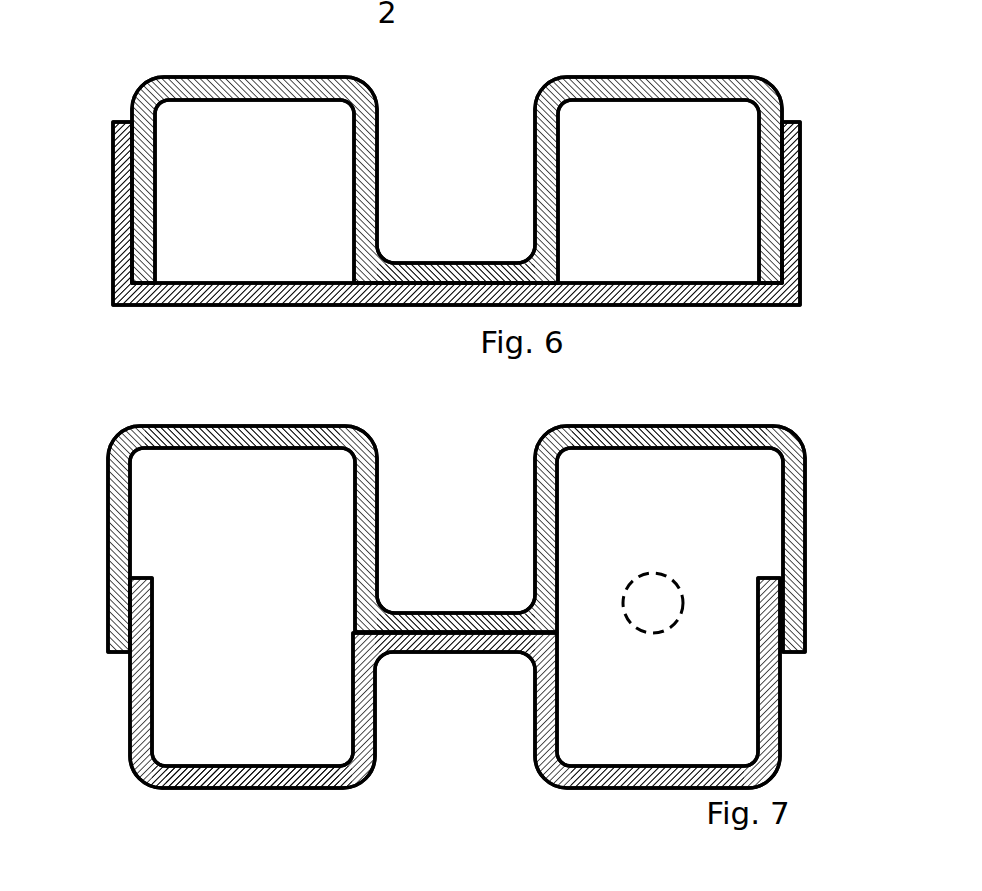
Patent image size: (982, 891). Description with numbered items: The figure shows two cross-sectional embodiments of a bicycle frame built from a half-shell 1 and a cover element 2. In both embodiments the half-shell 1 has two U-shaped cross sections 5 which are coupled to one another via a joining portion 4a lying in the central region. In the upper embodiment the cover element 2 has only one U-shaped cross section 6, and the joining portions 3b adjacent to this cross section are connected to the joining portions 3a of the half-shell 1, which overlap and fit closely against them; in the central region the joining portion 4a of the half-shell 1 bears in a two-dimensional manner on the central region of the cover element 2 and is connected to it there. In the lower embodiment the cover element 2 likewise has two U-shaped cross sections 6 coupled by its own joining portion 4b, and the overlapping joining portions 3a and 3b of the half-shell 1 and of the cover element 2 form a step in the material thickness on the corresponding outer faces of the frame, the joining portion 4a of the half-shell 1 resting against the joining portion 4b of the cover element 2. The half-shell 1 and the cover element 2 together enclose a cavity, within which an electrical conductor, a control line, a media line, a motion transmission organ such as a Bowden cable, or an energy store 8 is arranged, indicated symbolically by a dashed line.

In FIG. 6, the half-shell 1 is at (601, 53).
In FIG. 7, the half-shell 1 is at (598, 408).
In FIG. 6, the cover element 2 is at (326, 316).
In FIG. 7, the cover element 2 is at (303, 808).
In FIG. 6, the joining portion of the half-shell 3a is at (113, 150).
In FIG. 7, the joining portion of the half-shell 3a is at (107, 622).
In FIG. 6, the joining portion of the cover element 3b is at (113, 207).
In FIG. 7, the joining portion of the cover element 3b is at (129, 657).
In FIG. 6, the joining portion of the half-shell 4a is at (455, 277).
In FIG. 7, the joining portion of the half-shell 4a is at (455, 620).
In FIG. 7, the joining portion of the cover element 4b is at (437, 646).
In FIG. 6, the U-shaped cross section of the half-shell 5 is at (240, 68).
In FIG. 7, the U-shaped cross section of the half-shell 5 is at (235, 418).
In FIG. 6, the U-shaped cross section of the cover element 6 is at (147, 309).
In FIG. 7, the U-shaped cross section of the cover element 6 is at (213, 796).
In FIG. 7, the conductor, line, motion transmission organ or energy store 8 is at (653, 603).